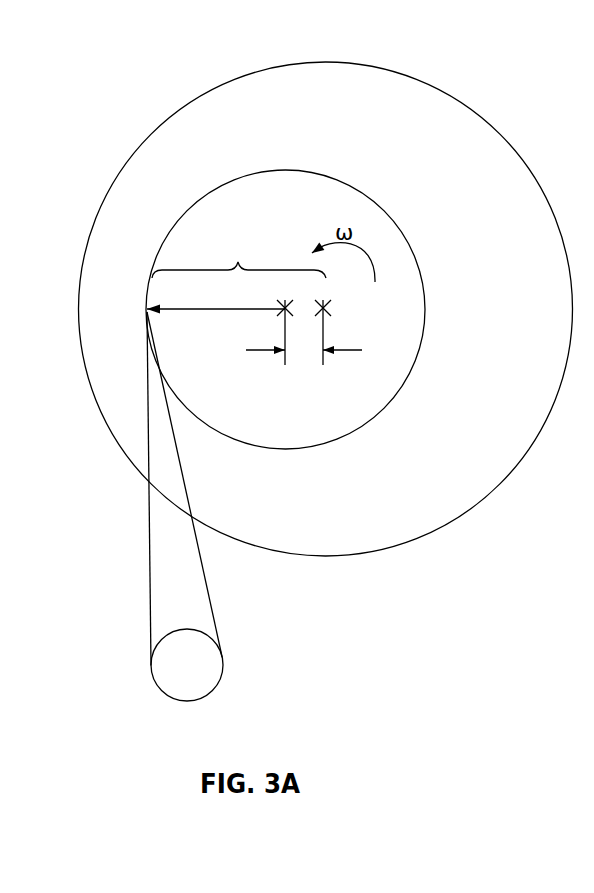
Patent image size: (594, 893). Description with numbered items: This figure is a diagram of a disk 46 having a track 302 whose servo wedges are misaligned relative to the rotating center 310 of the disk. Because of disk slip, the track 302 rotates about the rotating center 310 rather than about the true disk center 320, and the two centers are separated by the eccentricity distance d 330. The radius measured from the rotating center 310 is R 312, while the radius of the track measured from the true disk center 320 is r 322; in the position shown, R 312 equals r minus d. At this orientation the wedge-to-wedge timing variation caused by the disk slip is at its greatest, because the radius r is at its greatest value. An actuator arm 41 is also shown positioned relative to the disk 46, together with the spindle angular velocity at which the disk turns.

The disk 46 is at (447, 91).
The track 302 is at (341, 181).
The rotating center 310 is at (289, 302).
The true disk center 320 is at (328, 312).
The radius R 312 is at (163, 313).
The radius r 322 is at (259, 268).
The eccentricity distance d 330 is at (310, 353).
The actuator arm 41 is at (195, 583).